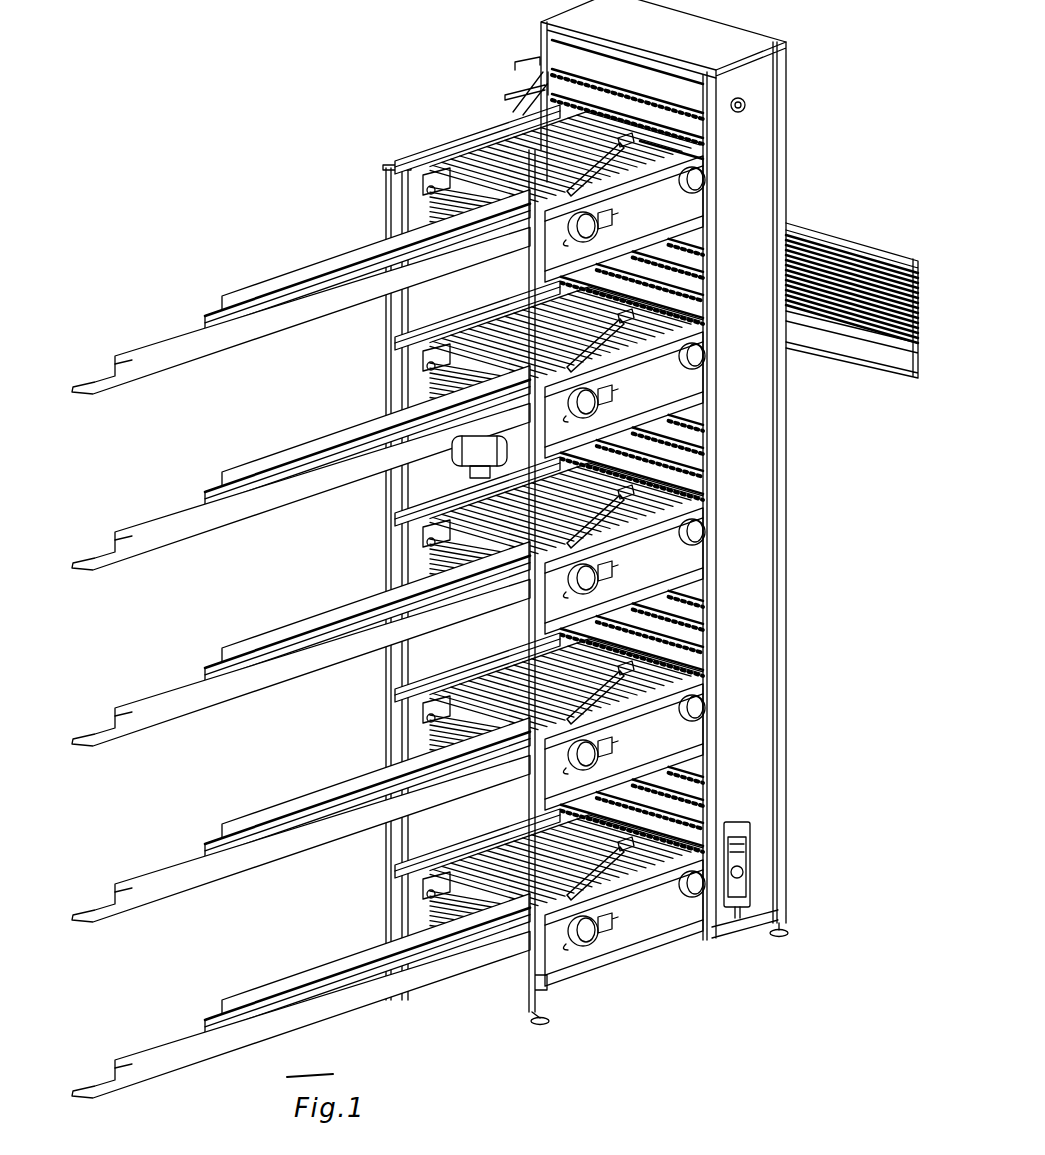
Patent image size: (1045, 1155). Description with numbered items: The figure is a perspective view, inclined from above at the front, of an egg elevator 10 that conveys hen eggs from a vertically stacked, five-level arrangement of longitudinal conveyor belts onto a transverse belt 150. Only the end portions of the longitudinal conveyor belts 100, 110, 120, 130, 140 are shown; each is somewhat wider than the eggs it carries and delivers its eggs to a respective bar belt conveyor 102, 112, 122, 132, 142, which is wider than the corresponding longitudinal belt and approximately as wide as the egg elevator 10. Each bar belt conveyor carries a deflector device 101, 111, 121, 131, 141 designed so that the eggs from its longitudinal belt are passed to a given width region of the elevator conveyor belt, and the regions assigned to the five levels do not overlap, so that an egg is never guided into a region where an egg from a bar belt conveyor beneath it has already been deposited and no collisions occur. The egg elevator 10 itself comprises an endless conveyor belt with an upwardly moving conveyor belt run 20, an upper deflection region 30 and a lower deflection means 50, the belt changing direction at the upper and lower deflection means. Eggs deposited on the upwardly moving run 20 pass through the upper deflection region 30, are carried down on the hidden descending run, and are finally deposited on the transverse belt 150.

The egg elevator 10 is at (794, 664).
The upwardly moving conveyor belt run 20 is at (598, 452).
The upper deflection region 30 is at (798, 50).
The lower deflection means 50 is at (796, 888).
The longitudinal conveyor belt 100 is at (233, 314).
The deflector device 101 is at (692, 182).
The bar belt conveyor 102 is at (503, 132).
The longitudinal conveyor belt 110 is at (213, 500).
The deflector device 111 is at (597, 345).
The bar belt conveyor 112 is at (445, 327).
The longitudinal conveyor belt 120 is at (212, 677).
The deflector device 121 is at (600, 521).
The bar belt conveyor 122 is at (447, 502).
The longitudinal conveyor belt 130 is at (215, 862).
The deflector device 131 is at (600, 697).
The bar belt conveyor 132 is at (445, 680).
The longitudinal conveyor belt 140 is at (193, 1040).
The deflector device 141 is at (610, 873).
The bar belt conveyor 142 is at (440, 866).
The transverse belt 150 is at (840, 245).